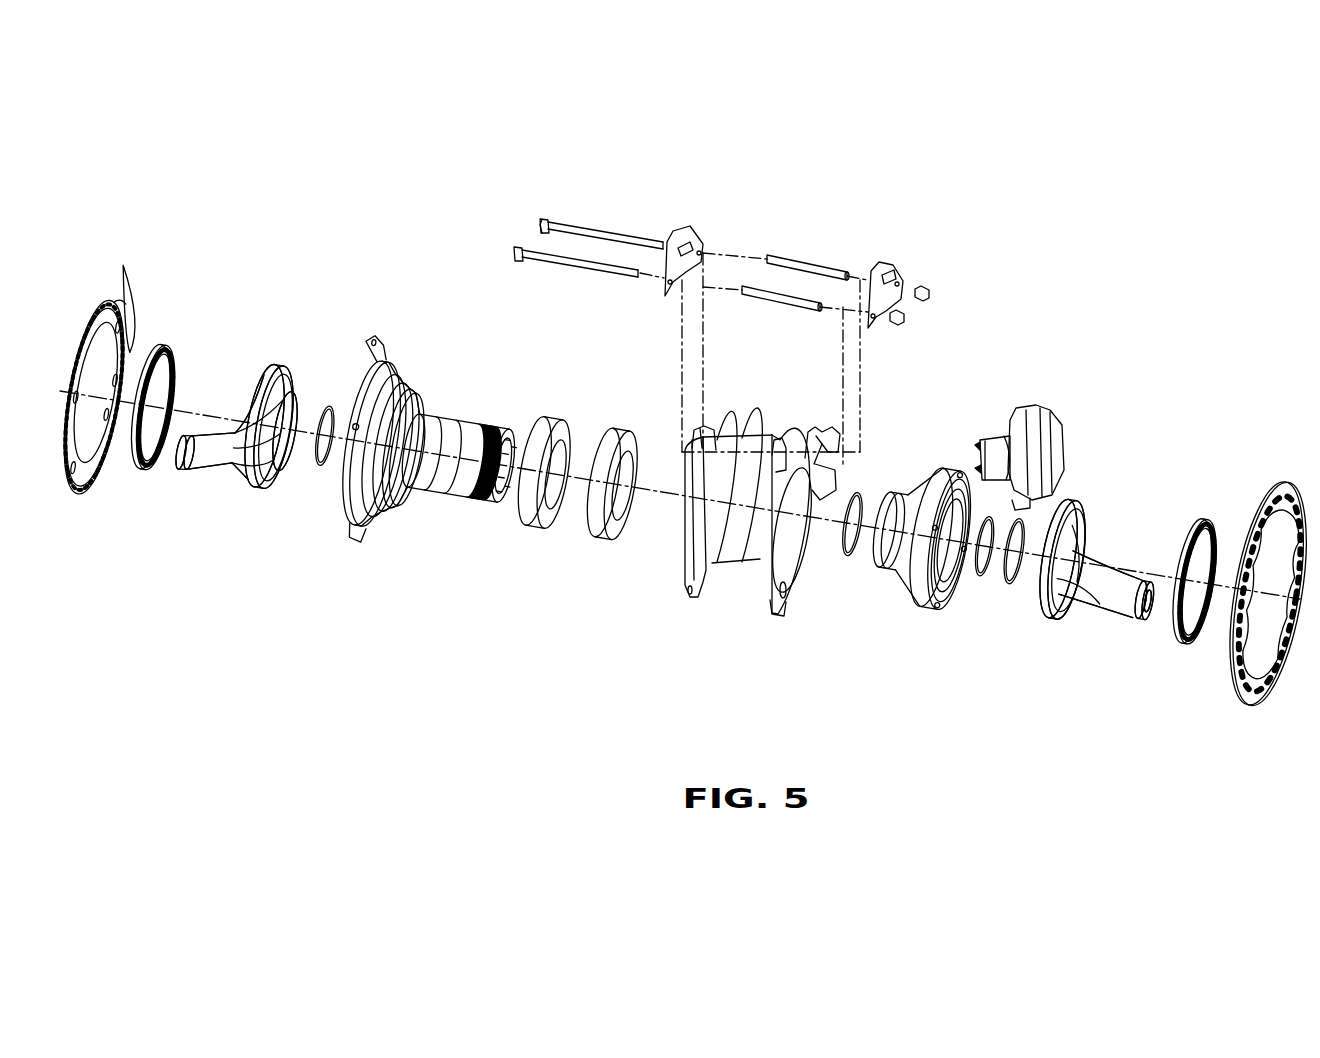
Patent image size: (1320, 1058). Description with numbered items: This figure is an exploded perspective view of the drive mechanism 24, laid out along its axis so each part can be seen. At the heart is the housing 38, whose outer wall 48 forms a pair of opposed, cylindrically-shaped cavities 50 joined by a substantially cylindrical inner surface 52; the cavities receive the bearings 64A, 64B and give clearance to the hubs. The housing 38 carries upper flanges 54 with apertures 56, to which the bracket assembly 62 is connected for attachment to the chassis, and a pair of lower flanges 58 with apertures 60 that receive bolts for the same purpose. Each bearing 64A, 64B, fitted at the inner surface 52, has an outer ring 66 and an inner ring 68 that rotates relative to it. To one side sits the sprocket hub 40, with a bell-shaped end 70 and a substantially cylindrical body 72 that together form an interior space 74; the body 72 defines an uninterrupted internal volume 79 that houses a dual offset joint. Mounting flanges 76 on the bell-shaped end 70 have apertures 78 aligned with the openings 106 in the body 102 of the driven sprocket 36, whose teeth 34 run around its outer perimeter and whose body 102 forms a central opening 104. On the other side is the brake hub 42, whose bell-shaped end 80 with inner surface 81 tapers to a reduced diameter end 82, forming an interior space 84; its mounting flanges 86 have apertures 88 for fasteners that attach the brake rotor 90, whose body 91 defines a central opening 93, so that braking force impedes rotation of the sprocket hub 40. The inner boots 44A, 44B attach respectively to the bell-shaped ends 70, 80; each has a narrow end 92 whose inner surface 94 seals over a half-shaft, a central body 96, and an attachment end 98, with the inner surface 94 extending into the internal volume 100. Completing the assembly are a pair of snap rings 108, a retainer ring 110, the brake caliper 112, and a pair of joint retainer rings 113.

The drive mechanism 24 is at (1104, 232).
The teeth 34 is at (97, 318).
The driven sprocket 36 is at (90, 409).
The housing 38 is at (764, 517).
The sprocket hub 40 is at (430, 442).
The brake hub 42 is at (921, 545).
The inner boot 44A is at (245, 445).
The inner boot 44B is at (1100, 614).
The outer wall 48 is at (754, 458).
The cavities 50 is at (797, 558).
The inner surface 52 is at (803, 525).
The upper flanges 54 is at (728, 437).
The apertures 56 is at (732, 432).
The lower flanges 58 is at (690, 588).
The apertures 60 is at (785, 593).
The bracket assembly 62 is at (681, 225).
The bearing 64A is at (528, 533).
The bearing 64B is at (598, 528).
The outer ring 66 is at (587, 512).
The inner ring 68 is at (620, 500).
The bell-shaped end 70 is at (403, 383).
The body 72 is at (447, 417).
The interior space 74 is at (505, 487).
The mounting flanges 76 is at (372, 372).
The apertures 78 is at (390, 365).
The internal volume 79 is at (512, 447).
The bell-shaped end 80 is at (949, 468).
The inner surface 81 is at (953, 508).
The reduced diameter end 82 is at (893, 490).
The interior space 84 is at (953, 593).
The mounting flanges 86 is at (923, 603).
The apertures 88 is at (923, 610).
The brake rotor 90 is at (1267, 574).
The body 91 is at (1250, 698).
The narrow end 92 is at (183, 468).
The central opening 93 is at (1270, 610).
The inner surface 94 is at (1141, 615).
The central body 96 is at (230, 428).
The attachment end 98 is at (268, 490).
The internal volume 100 is at (286, 403).
The body 102 is at (100, 318).
The central opening 104 is at (95, 368).
The openings 106 is at (90, 475).
The snap rings 108 is at (158, 355).
The retainer ring 110 is at (1008, 582).
The brake caliper 112 is at (1037, 409).
The joint retainer rings 113 is at (319, 465).